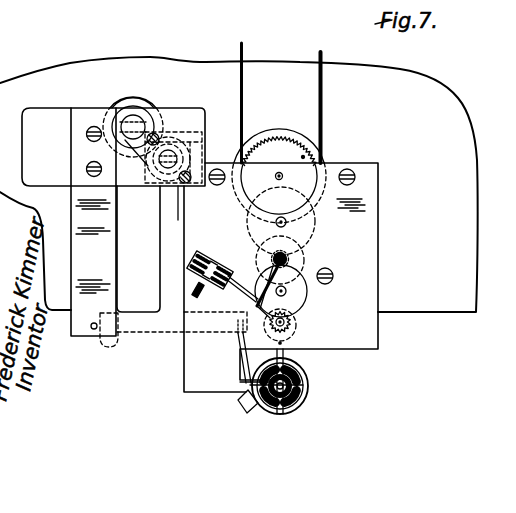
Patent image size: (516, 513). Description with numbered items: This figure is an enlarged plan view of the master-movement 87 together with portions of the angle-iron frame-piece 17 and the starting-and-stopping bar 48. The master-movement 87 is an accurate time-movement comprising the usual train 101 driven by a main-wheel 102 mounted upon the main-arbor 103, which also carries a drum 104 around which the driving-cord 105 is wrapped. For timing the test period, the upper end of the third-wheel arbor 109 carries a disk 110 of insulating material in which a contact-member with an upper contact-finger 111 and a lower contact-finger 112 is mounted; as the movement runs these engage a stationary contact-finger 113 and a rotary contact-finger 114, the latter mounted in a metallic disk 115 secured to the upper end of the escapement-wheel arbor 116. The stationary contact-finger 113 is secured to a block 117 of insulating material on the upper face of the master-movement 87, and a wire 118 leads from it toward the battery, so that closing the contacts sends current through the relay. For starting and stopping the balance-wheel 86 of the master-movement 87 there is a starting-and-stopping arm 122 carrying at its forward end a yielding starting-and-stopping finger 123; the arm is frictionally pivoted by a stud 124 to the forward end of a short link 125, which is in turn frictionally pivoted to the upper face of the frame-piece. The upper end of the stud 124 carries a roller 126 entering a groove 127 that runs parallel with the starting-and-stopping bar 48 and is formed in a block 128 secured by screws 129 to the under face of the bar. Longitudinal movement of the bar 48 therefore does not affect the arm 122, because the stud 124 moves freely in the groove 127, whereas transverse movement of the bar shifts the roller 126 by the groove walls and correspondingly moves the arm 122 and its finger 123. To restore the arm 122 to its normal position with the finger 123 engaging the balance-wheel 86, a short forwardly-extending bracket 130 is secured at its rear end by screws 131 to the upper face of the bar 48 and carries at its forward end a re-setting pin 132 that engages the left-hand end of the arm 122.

The angle-iron frame-piece 17 is at (461, 118).
The starting-and-stopping bar 48 is at (26, 127).
The balance-wheel 86 is at (306, 386).
The master-movement 87 is at (375, 218).
The train 101 is at (252, 242).
The main-wheel 102 is at (282, 138).
The main-arbor 103 is at (276, 178).
The drum 104 is at (331, 154).
The driving-cord 105 is at (323, 57).
The third-wheel arbor 109 is at (288, 258).
The disk of insulating material 110 is at (273, 258).
The upper contact-finger 111 is at (261, 276).
The lower contact-finger 112 is at (298, 299).
The stationary contact-finger 113 is at (236, 296).
The rotary contact-finger 114 is at (260, 318).
The metallic disk 115 is at (295, 322).
The escapement-wheel arbor 116 is at (295, 335).
The block of insulating material 117 is at (199, 259).
The wire 118 is at (195, 289).
The starting-and-stopping arm 122 is at (163, 223).
The starting-and-stopping finger 123 is at (242, 368).
The stud 124 is at (175, 147).
The short link 125 is at (160, 124).
The roller 126 is at (151, 172).
The groove 127 is at (198, 148).
The block 128 is at (194, 131).
The screws 129 is at (188, 186).
The bracket 130 is at (72, 259).
The screws 131 is at (87, 136).
The re-setting pin 132 is at (92, 330).